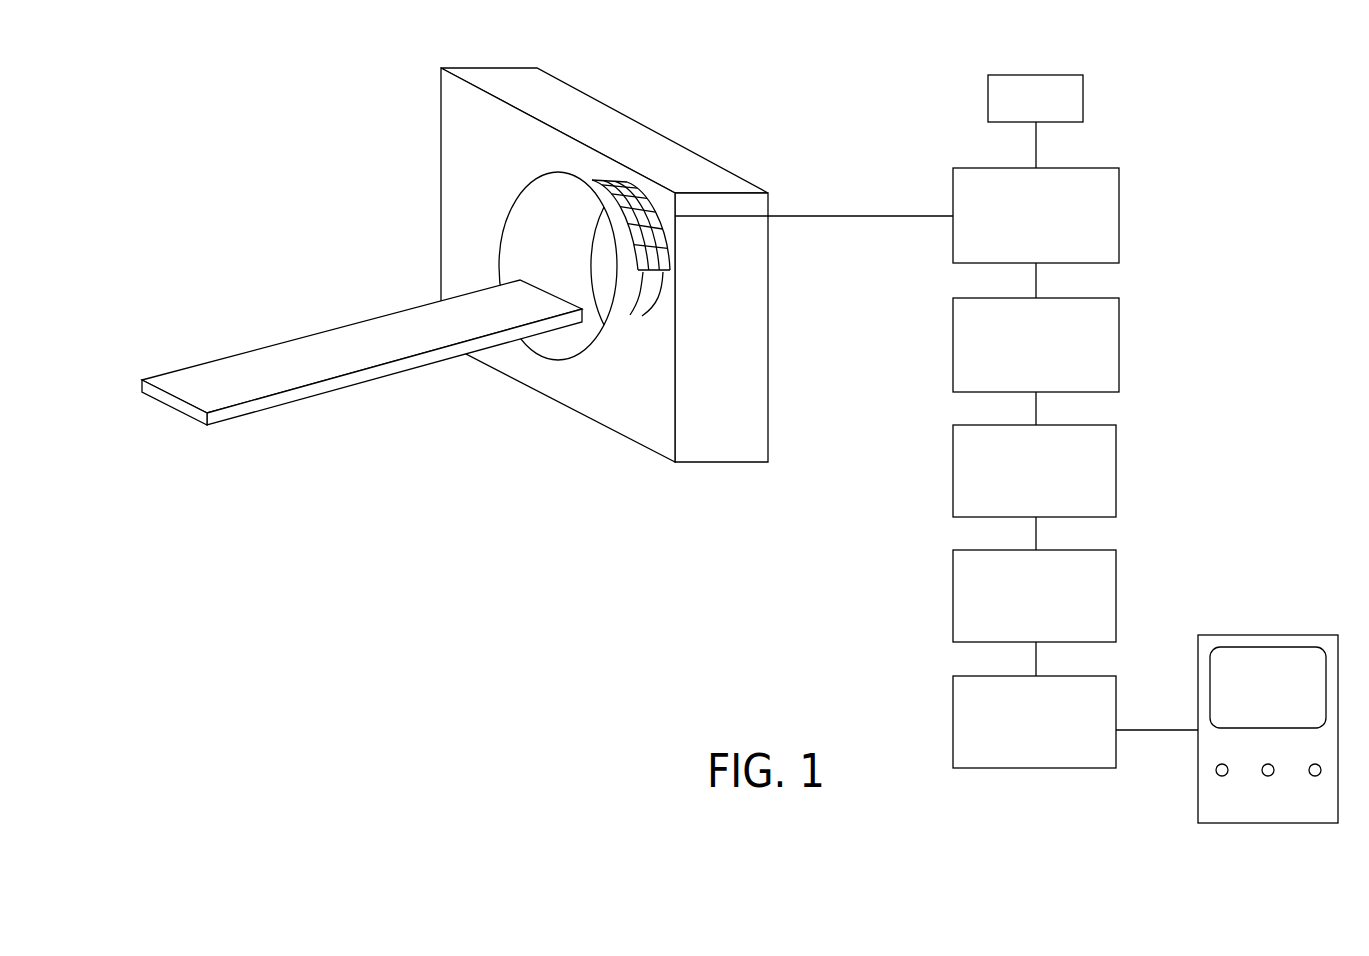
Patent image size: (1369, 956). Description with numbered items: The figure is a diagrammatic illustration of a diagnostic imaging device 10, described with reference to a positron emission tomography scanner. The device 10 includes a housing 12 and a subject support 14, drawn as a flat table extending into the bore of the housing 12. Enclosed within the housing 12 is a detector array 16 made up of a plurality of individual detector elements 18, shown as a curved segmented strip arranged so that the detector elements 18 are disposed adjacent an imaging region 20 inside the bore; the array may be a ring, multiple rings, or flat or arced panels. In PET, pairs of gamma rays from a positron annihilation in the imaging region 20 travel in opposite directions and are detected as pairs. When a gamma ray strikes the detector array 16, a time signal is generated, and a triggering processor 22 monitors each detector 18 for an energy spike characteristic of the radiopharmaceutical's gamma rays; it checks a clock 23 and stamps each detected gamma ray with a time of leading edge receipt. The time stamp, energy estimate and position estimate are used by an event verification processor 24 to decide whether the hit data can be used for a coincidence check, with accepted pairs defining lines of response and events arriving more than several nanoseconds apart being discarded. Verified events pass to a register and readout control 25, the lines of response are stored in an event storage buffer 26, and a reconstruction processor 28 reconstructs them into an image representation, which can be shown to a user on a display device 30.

The diagnostic imaging device 10 is at (738, 131).
The housing 12 is at (722, 463).
The subject support 14 is at (292, 403).
The detector array 16 is at (653, 207).
The detector elements 18 is at (639, 306).
The imaging region 20 is at (533, 252).
The triggering processor 22 is at (953, 240).
The clock 23 is at (988, 84).
The event verification processor 24 is at (953, 362).
The register and readout control 25 is at (953, 488).
The event storage buffer 26 is at (953, 612).
The reconstruction processor 28 is at (953, 740).
The display device 30 is at (1198, 777).